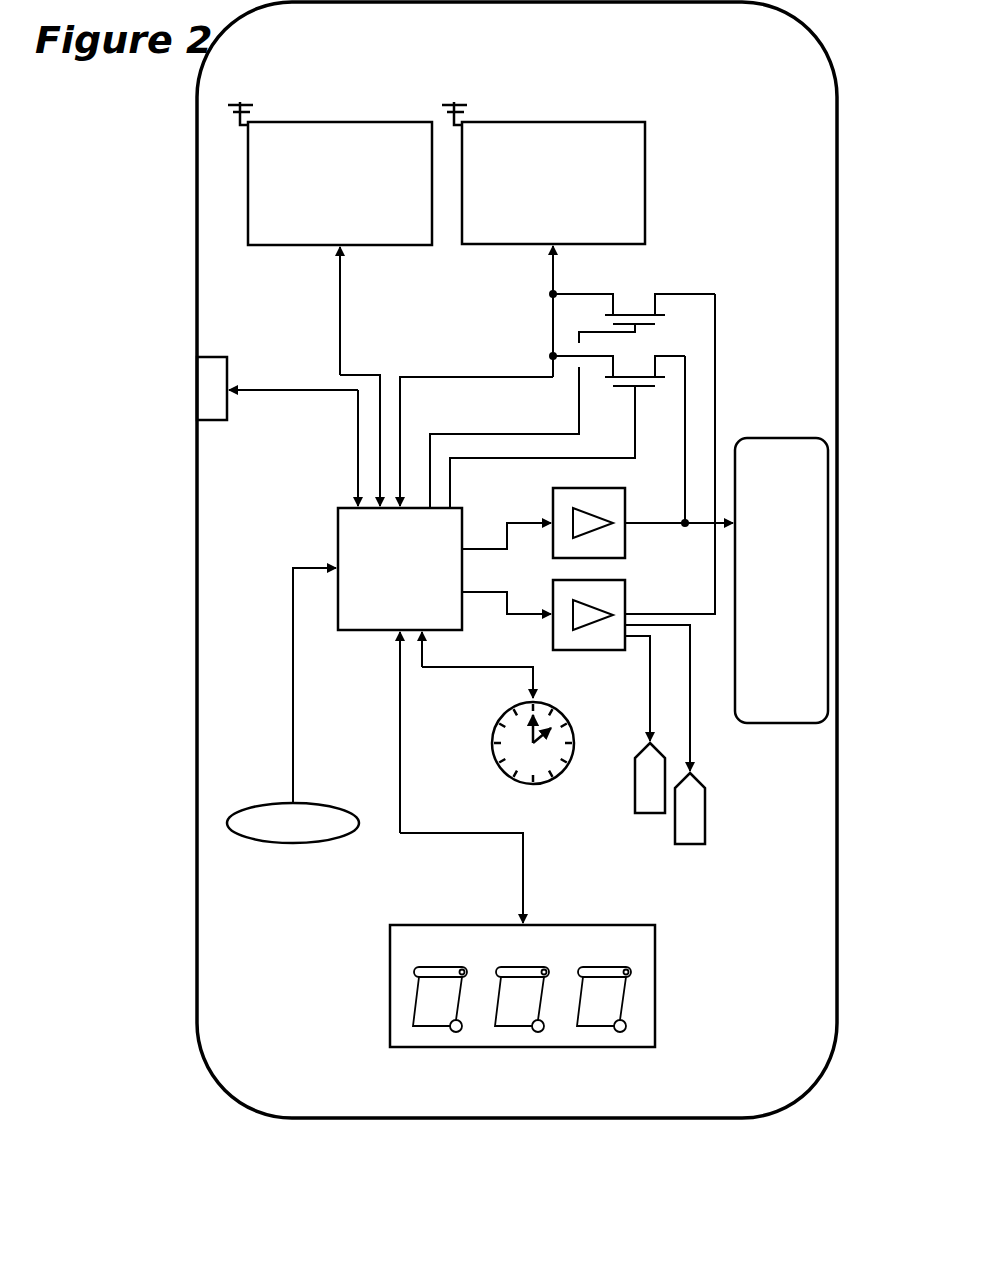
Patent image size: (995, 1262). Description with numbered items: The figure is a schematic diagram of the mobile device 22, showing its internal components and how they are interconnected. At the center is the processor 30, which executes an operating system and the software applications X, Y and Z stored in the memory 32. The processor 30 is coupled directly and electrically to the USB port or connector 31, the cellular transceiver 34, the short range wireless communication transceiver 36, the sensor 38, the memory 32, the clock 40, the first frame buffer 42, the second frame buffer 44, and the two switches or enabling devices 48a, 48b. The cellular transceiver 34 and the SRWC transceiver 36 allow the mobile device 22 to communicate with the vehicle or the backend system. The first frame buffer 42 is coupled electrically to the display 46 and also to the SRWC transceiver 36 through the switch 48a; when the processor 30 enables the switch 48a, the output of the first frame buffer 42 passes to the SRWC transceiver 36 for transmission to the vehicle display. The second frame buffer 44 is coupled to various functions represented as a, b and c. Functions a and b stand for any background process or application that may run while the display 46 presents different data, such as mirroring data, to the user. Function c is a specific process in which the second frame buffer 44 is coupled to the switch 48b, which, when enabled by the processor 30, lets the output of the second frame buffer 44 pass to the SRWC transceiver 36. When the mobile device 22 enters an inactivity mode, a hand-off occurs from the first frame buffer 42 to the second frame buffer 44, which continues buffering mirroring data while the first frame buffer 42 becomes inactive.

The mobile device 22 is at (175, 247).
The processor 30 is at (400, 569).
The USB port or connector 31 is at (212, 357).
The memory 32 is at (522, 986).
The cellular transceiver 34 is at (330, 173).
The short range wireless communication (SRWC) transceiver 36 is at (543, 173).
The sensor 38 is at (293, 823).
The clock 40 is at (571, 717).
The first frame buffer 42 is at (610, 488).
The second frame buffer 44 is at (610, 580).
The display 46 is at (757, 438).
The switch 48a is at (628, 411).
The switch 48b is at (631, 292).
The function c is at (719, 356).
The function a is at (650, 778).
The function b is at (690, 808).